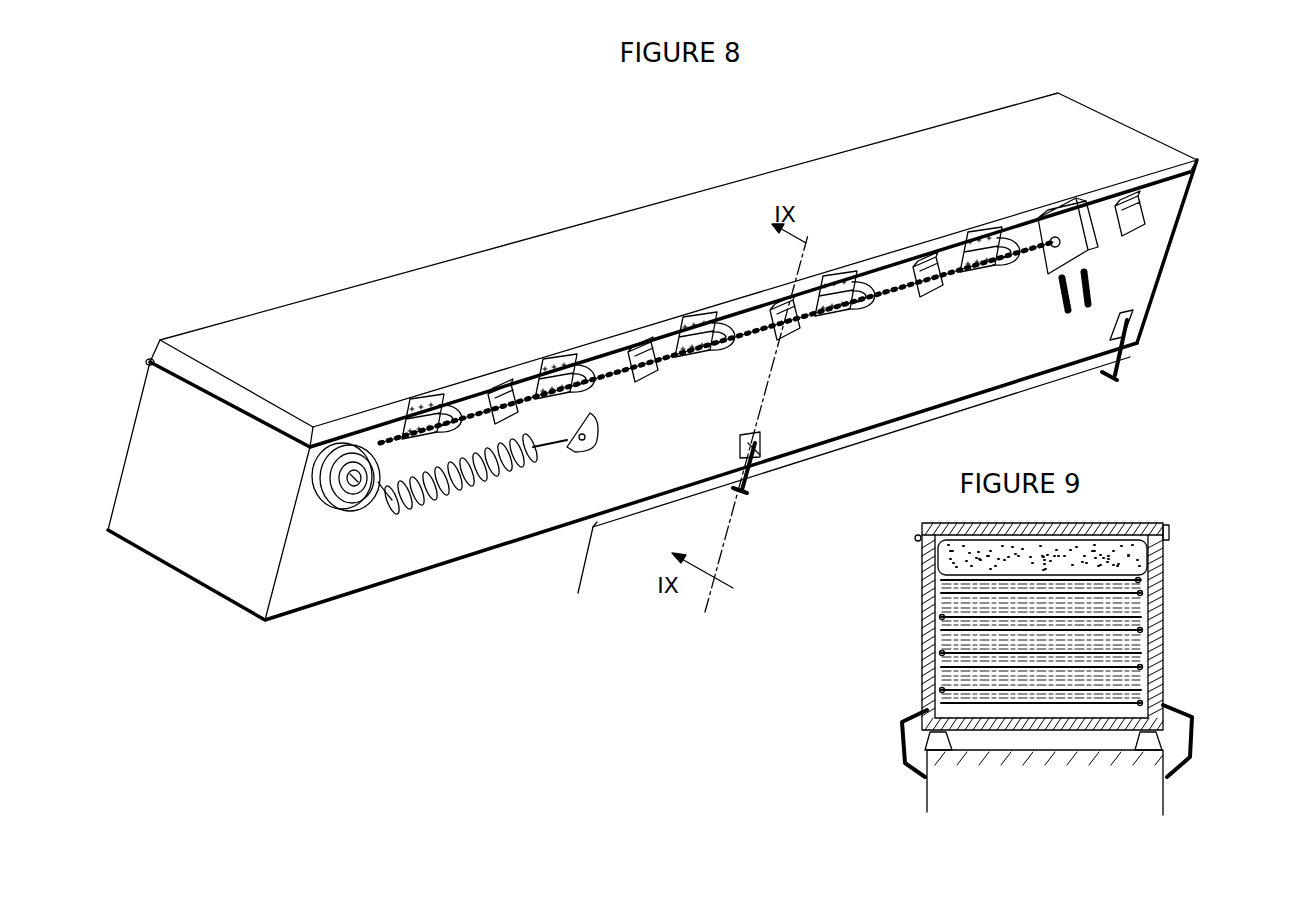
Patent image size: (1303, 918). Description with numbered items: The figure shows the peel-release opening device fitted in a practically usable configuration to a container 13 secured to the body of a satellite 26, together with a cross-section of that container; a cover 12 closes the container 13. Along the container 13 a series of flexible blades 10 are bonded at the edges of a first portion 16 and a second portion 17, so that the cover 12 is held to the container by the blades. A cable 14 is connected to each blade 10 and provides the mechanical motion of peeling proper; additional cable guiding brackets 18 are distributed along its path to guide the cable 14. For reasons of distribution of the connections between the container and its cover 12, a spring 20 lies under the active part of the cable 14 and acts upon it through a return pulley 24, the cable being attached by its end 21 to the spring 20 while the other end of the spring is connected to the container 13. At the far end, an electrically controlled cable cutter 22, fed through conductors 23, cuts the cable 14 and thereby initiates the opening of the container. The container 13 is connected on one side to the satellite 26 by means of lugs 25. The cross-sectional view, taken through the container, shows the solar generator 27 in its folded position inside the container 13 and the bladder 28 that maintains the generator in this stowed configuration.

In FIG. 8, the flexible blade 10 is at (685, 302).
In FIG. 8, the lid 12 is at (1143, 142).
In FIG. 9, the lid 12 is at (925, 523).
In FIG. 8, the container 13 is at (1160, 276).
In FIG. 9, the container 13 is at (922, 643).
In FIG. 8, the cable 14 is at (902, 298).
In FIG. 8, the portion 16 is at (405, 400).
In FIG. 8, the portion 17 is at (432, 431).
In FIG. 8, the cable guiding bracket 18 is at (500, 400).
In FIG. 8, the spring 20 is at (440, 502).
In FIG. 8, the cable end 21 is at (386, 502).
In FIG. 8, the cable cutter 22 is at (1055, 220).
In FIG. 8, the conductors 23 is at (1060, 302).
In FIG. 8, the return pulley 24 is at (345, 502).
In FIG. 8, the lugs 25 is at (1120, 377).
In FIG. 9, the lugs 25 is at (900, 740).
In FIG. 8, the satellite 26 is at (608, 555).
In FIG. 9, the satellite 26 is at (1170, 796).
In FIG. 9, the solar generator 27 is at (1050, 688).
In FIG. 9, the bladder 28 is at (1120, 545).